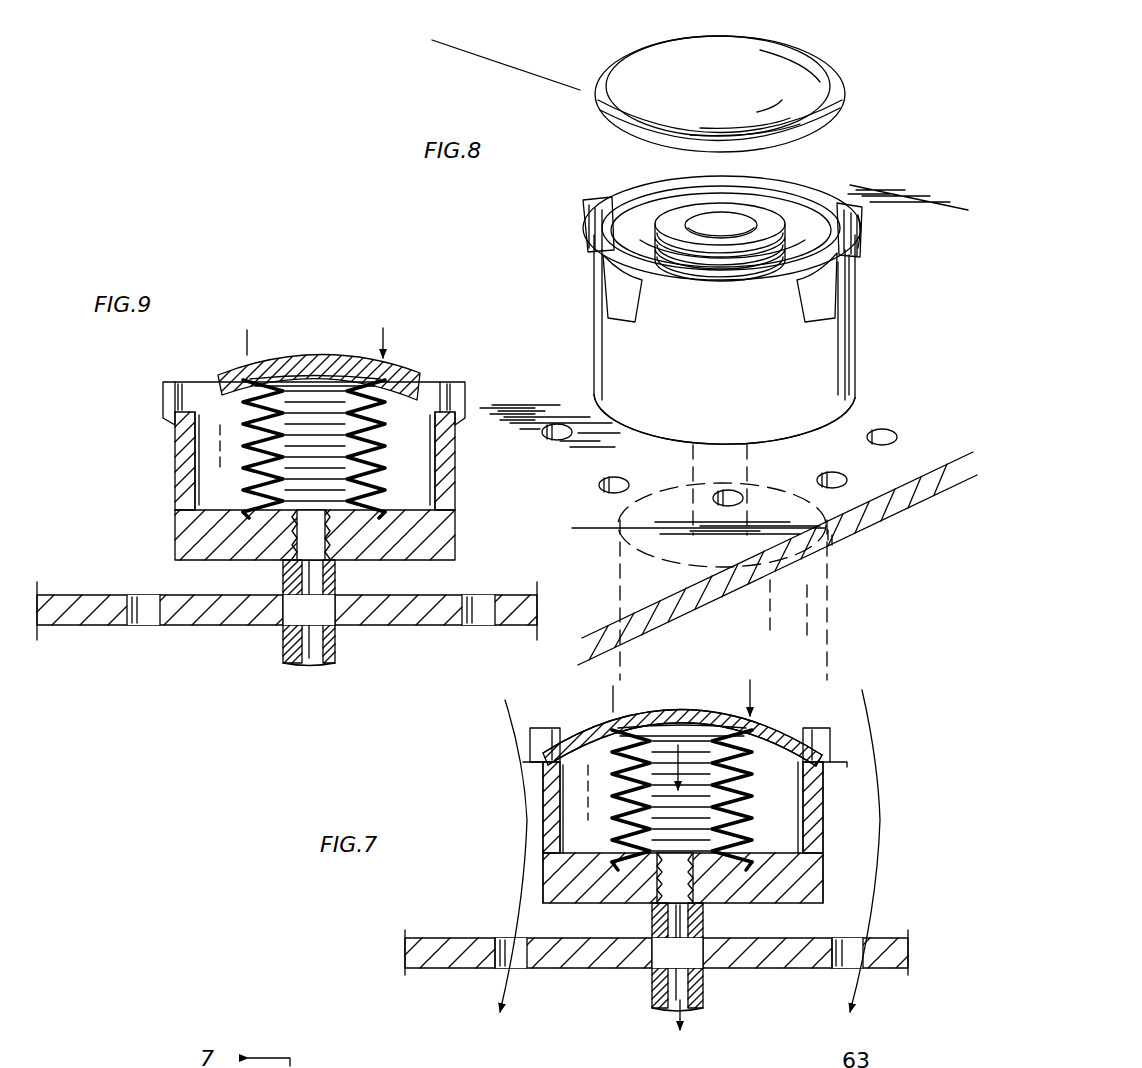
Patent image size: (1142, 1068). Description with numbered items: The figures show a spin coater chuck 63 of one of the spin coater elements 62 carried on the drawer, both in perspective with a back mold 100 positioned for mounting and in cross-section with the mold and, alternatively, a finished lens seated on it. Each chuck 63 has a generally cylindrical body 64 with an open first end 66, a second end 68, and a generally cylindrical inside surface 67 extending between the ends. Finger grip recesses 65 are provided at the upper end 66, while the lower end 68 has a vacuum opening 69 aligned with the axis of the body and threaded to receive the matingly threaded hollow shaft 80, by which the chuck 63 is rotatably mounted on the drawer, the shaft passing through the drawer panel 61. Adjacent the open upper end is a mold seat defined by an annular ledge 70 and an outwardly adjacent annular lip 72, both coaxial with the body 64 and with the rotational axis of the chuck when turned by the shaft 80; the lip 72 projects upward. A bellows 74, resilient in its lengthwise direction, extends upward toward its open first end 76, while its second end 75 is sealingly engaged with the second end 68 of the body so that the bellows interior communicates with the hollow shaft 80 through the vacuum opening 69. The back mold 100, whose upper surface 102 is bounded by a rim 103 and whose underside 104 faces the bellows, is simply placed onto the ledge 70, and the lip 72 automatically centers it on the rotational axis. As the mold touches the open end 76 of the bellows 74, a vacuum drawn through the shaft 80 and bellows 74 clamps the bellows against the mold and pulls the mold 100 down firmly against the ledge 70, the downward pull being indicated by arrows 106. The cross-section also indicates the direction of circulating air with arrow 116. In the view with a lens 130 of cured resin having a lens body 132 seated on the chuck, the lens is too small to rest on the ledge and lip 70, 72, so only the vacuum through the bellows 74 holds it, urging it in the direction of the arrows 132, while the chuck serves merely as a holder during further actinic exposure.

In FIG. 7, the panel 61 is at (615, 968).
In FIG. 9, the panel 61 is at (287, 611).
In FIG. 7, the spin coater element 62 is at (518, 968).
In FIG. 8, the spin coater chuck 63 is at (876, 386).
In FIG. 7, the spin coater chuck 63 is at (858, 778).
In FIG. 9, the spin coater chuck 63 is at (314, 471).
In FIG. 8, the cylindrical body 64 is at (830, 362).
In FIG. 7, the cylindrical body 64 is at (812, 828).
In FIG. 8, the finger grip recesses 65 is at (598, 302).
In FIG. 8, the open first end 66 is at (770, 182).
In FIG. 7, the cylindrical inside surface 67 is at (800, 778).
In FIG. 8, the second end 68 is at (796, 440).
In FIG. 7, the second end 68 is at (796, 873).
In FIG. 7, the vacuum opening 69 is at (660, 870).
In FIG. 9, the vacuum opening 69 is at (320, 560).
In FIG. 8, the annular ledge 70 is at (852, 212).
In FIG. 8, the annular lip 72 is at (800, 190).
In FIG. 8, the bellows 74 is at (714, 278).
In FIG. 7, the bellows 74 is at (745, 798).
In FIG. 9, the bellows 74 is at (372, 450).
In FIG. 7, the second end of bellows 75 is at (750, 858).
In FIG. 8, the open first end of bellows 76 is at (664, 214).
In FIG. 7, the open first end of bellows 76 is at (722, 718).
In FIG. 9, the open first end of bellows 76 is at (362, 378).
In FIG. 7, the hollow shaft 80 is at (700, 936).
In FIG. 9, the hollow shaft 80 is at (337, 651).
In FIG. 8, the back mold 100 is at (790, 44).
In FIG. 7, the back mold 100 is at (790, 740).
In FIG. 8, the cap top surface 102 is at (718, 86).
In FIG. 7, the cap top surface 102 is at (525, 850).
In FIG. 8, the cap rim 103 is at (836, 96).
In FIG. 7, the cap rim 103 is at (818, 748).
In FIG. 7, the cap underside 104 is at (592, 745).
In FIG. 7, the applied force 106 is at (613, 690).
In FIG. 7, the air circulation arrow 116 is at (520, 925).
In FIG. 9, the lens 130 is at (430, 372).
In FIG. 9, the lens body 132 is at (247, 330).